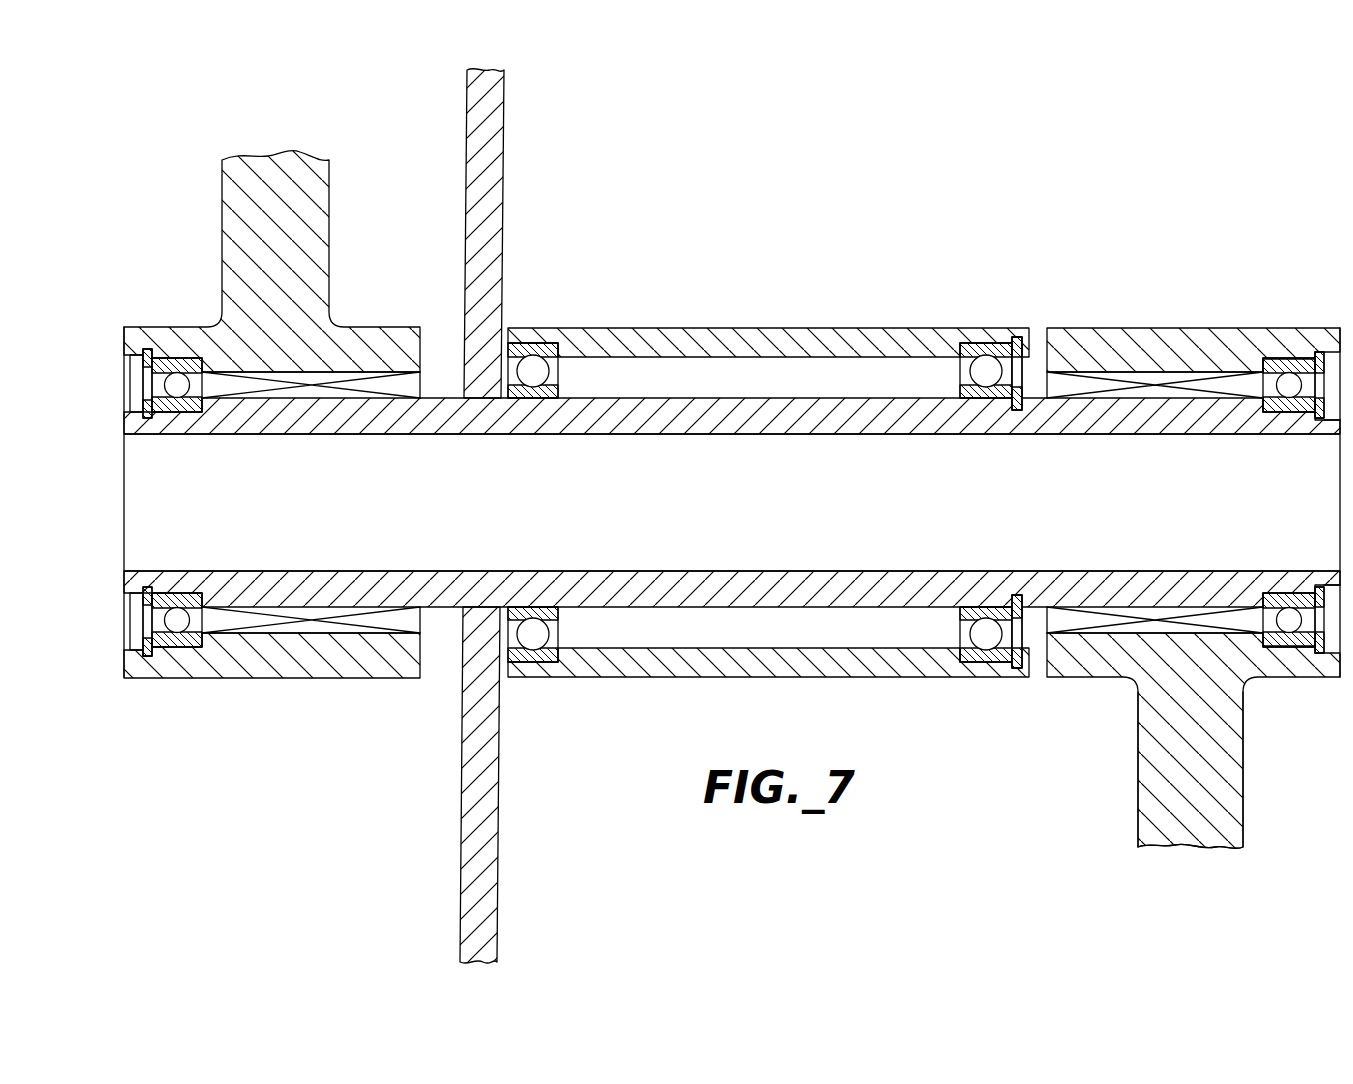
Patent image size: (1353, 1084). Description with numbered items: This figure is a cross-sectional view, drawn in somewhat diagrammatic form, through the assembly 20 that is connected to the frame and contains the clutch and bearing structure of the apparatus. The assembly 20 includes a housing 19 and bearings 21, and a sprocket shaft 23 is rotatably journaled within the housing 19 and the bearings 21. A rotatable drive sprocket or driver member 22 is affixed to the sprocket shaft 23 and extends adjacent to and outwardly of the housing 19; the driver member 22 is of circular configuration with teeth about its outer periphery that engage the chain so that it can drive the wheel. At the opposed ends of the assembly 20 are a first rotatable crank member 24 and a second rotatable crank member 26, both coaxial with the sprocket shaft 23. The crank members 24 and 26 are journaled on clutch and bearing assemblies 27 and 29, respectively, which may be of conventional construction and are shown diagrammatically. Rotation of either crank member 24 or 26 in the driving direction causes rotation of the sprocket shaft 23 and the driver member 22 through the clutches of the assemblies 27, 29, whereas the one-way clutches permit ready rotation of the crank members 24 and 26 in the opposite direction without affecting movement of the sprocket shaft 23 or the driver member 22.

The housing 19 is at (833, 330).
The assembly 20 is at (1228, 318).
The bearings 21 is at (528, 330).
The drive sprocket or driver member 22 is at (487, 154).
The sprocket shaft 23 is at (765, 426).
The first rotatable crank member 24 is at (230, 249).
The second rotatable crank member 26 is at (1236, 773).
The clutch and bearing assembly 27 is at (390, 382).
The clutch and bearing assembly 29 is at (1077, 378).